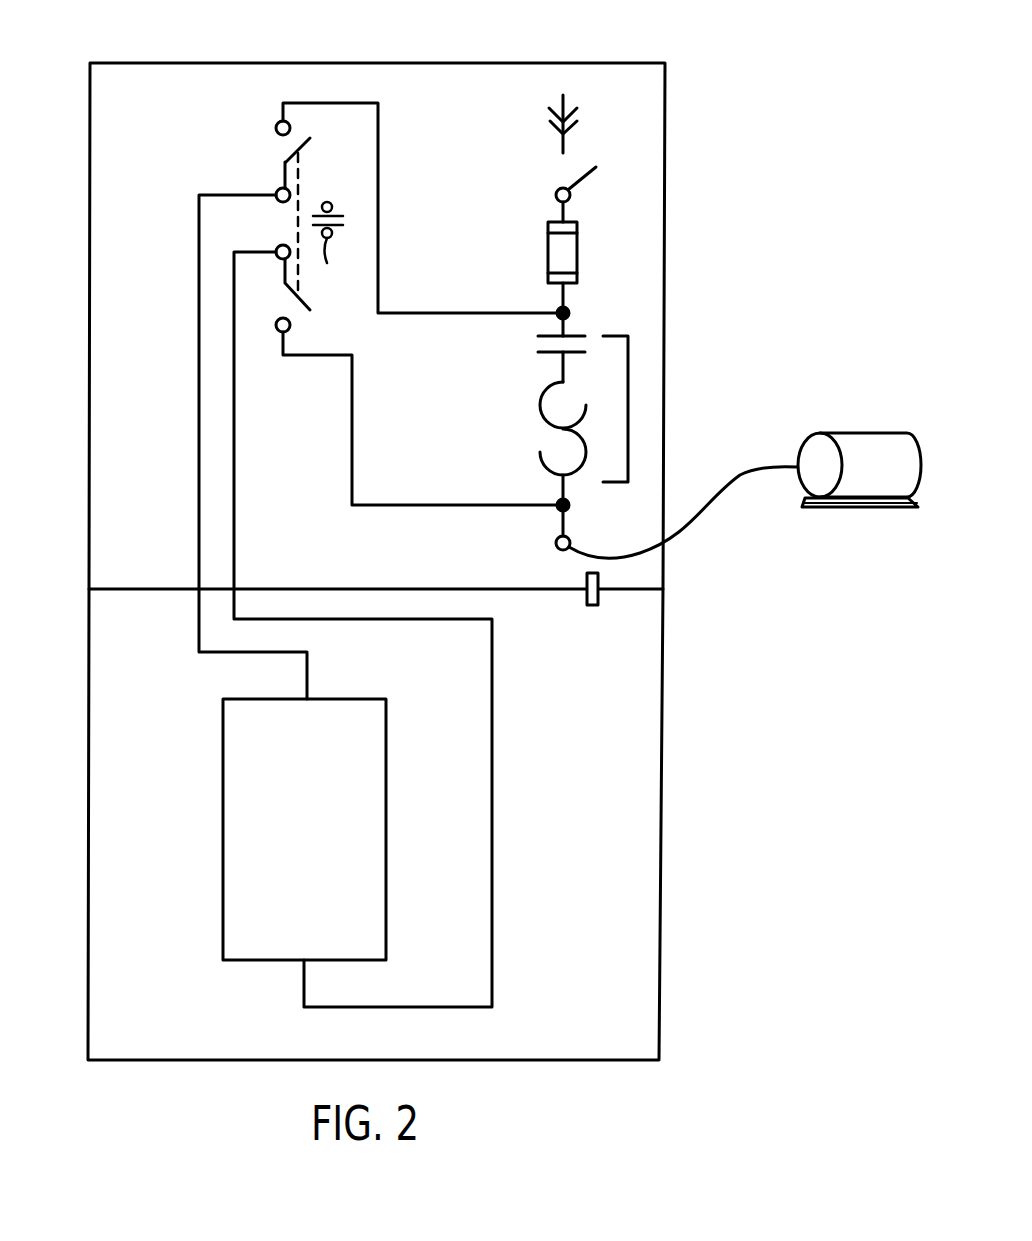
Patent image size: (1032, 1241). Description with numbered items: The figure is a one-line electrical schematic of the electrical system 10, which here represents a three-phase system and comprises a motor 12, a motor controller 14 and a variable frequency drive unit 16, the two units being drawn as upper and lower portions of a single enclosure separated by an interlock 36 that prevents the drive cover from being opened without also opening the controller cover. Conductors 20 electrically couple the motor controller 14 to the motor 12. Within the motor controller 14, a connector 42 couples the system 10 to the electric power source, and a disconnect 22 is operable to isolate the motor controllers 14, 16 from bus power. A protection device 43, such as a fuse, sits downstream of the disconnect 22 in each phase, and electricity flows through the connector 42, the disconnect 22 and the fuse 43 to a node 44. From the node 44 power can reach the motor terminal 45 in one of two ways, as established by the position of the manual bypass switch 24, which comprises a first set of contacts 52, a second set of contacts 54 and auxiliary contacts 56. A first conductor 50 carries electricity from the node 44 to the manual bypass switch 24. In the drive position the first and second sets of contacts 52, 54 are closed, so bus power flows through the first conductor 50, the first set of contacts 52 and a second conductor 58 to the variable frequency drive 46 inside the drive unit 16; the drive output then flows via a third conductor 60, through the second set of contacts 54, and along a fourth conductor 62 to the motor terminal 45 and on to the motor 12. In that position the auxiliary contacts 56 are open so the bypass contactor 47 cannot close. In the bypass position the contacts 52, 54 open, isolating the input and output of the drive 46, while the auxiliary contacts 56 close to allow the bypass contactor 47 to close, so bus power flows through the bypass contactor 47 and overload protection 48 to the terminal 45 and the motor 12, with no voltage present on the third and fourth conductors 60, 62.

The electrical system 10 is at (748, 52).
The motor 12 is at (865, 437).
The motor controller 14 is at (90, 112).
The variable frequency drive unit 16 is at (87, 810).
The conductors 20 is at (730, 487).
The disconnect 22 is at (588, 175).
The manual bypass switch 24 is at (273, 190).
The interlock 36 is at (584, 601).
The connector 42 is at (550, 123).
The protection device 43 is at (552, 252).
The node 44 is at (570, 310).
The motor terminal 45 is at (553, 545).
The variable frequency drive 46 is at (223, 738).
The bypass contactor 47 is at (577, 337).
The overload protection 48 is at (537, 407).
The first conductor 50 is at (378, 262).
The first set of contacts 52 is at (276, 144).
The second set of contacts 54 is at (278, 300).
The auxiliary contacts 56 is at (326, 248).
The second conductor 58 is at (197, 480).
The third conductor 60 is at (493, 755).
The fourth conductor 62 is at (353, 462).